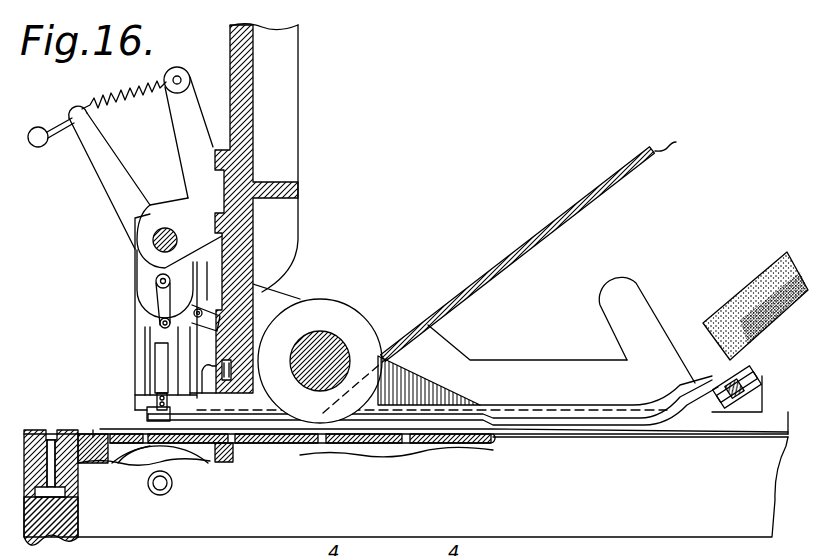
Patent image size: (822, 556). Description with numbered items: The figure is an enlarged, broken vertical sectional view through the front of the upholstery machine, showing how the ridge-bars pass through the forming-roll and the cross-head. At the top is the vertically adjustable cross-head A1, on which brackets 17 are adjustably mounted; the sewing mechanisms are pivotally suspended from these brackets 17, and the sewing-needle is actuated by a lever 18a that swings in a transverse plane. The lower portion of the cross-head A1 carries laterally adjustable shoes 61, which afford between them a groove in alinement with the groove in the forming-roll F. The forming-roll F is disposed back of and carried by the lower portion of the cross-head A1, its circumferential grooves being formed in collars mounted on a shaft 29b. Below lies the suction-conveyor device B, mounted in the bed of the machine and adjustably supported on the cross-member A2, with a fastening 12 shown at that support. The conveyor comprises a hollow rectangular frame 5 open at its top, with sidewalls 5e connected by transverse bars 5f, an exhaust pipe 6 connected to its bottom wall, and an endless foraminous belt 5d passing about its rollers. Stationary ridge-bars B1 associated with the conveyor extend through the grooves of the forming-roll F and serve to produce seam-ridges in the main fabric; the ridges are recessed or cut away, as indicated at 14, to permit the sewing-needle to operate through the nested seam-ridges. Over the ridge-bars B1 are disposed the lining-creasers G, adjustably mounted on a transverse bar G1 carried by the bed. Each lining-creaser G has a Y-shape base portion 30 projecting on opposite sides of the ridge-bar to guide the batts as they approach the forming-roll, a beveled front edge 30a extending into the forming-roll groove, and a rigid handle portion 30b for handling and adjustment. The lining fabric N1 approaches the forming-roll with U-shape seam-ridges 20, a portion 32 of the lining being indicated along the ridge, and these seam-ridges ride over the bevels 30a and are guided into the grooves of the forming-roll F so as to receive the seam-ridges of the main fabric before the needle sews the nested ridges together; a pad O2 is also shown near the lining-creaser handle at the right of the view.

The cross-head A1 is at (256, 91).
The brackets 17 is at (187, 200).
The shoes 61 is at (153, 238).
The exhaust pipe 6 is at (135, 277).
The lever 18a is at (162, 353).
The recess 14 is at (160, 428).
The Y-shape base portions 30 is at (588, 418).
The ridge-bars B1 is at (736, 425).
The suction-conveyor device B is at (433, 487).
The hollow rectangular frame 5 is at (302, 469).
The endless foraminous belt 5d is at (283, 440).
The sidewalls 5e is at (182, 458).
The transverse bars 5f is at (90, 430).
The screw block 12 is at (28, 432).
The cross-member A2 is at (78, 520).
The forming-roll F is at (358, 312).
The shaft 29b is at (321, 332).
The U-shape seam-ridges 20 is at (572, 207).
The lining fabric N1 is at (674, 137).
The bar portion 32 is at (500, 274).
The beveled front edges 30a is at (402, 364).
The lining-creasers G is at (553, 368).
The rigid handle portions 30b is at (622, 287).
The transverse bar G1 is at (760, 380).
The pad O2 is at (774, 270).